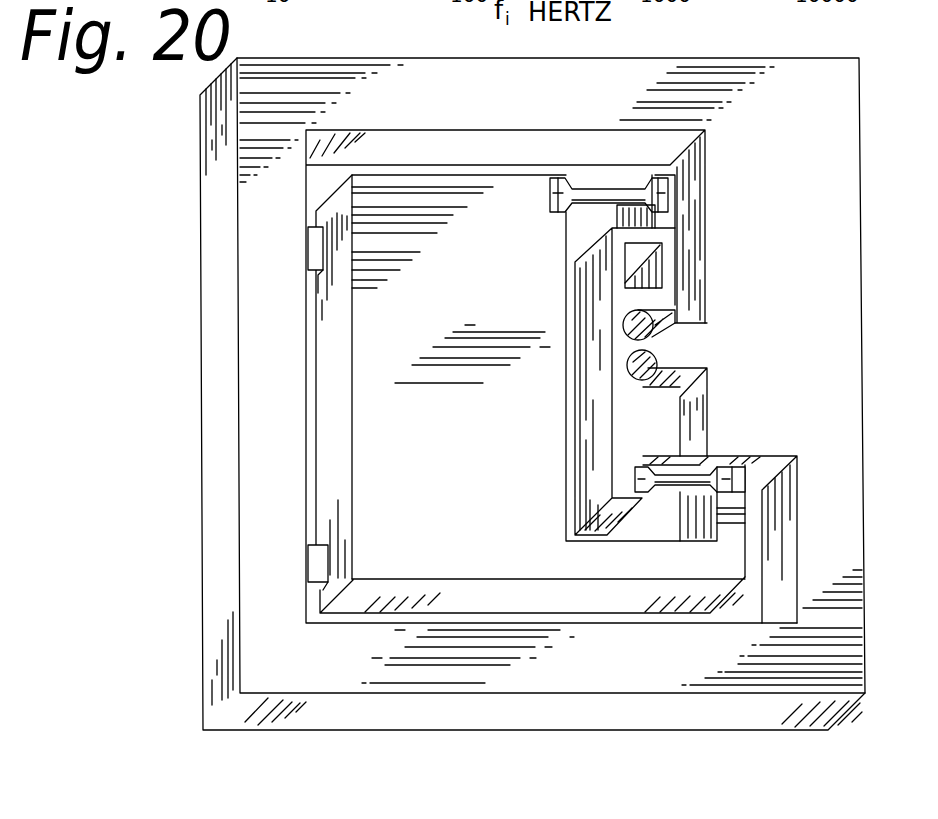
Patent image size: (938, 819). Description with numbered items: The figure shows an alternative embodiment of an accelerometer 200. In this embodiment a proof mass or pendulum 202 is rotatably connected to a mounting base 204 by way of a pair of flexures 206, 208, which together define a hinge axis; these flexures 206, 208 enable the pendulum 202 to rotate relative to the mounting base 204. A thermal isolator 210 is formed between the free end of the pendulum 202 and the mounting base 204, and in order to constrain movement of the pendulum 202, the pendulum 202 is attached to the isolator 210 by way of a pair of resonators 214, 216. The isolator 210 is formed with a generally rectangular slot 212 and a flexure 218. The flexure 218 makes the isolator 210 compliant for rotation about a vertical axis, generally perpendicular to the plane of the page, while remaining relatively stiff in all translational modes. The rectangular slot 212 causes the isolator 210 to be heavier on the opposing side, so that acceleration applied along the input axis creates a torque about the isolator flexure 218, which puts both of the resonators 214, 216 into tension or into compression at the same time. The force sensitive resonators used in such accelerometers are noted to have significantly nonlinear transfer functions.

The accelerometer 200 is at (168, 285).
The pendulum 202 is at (497, 437).
The mounting base 204 is at (298, 400).
The flexure 206 is at (316, 239).
The flexure 208 is at (318, 563).
The thermal isolator 210 is at (652, 298).
The rectangular slot 212 is at (657, 257).
The resonator 214 is at (665, 482).
The resonator 216 is at (587, 193).
The flexure 218 is at (665, 343).